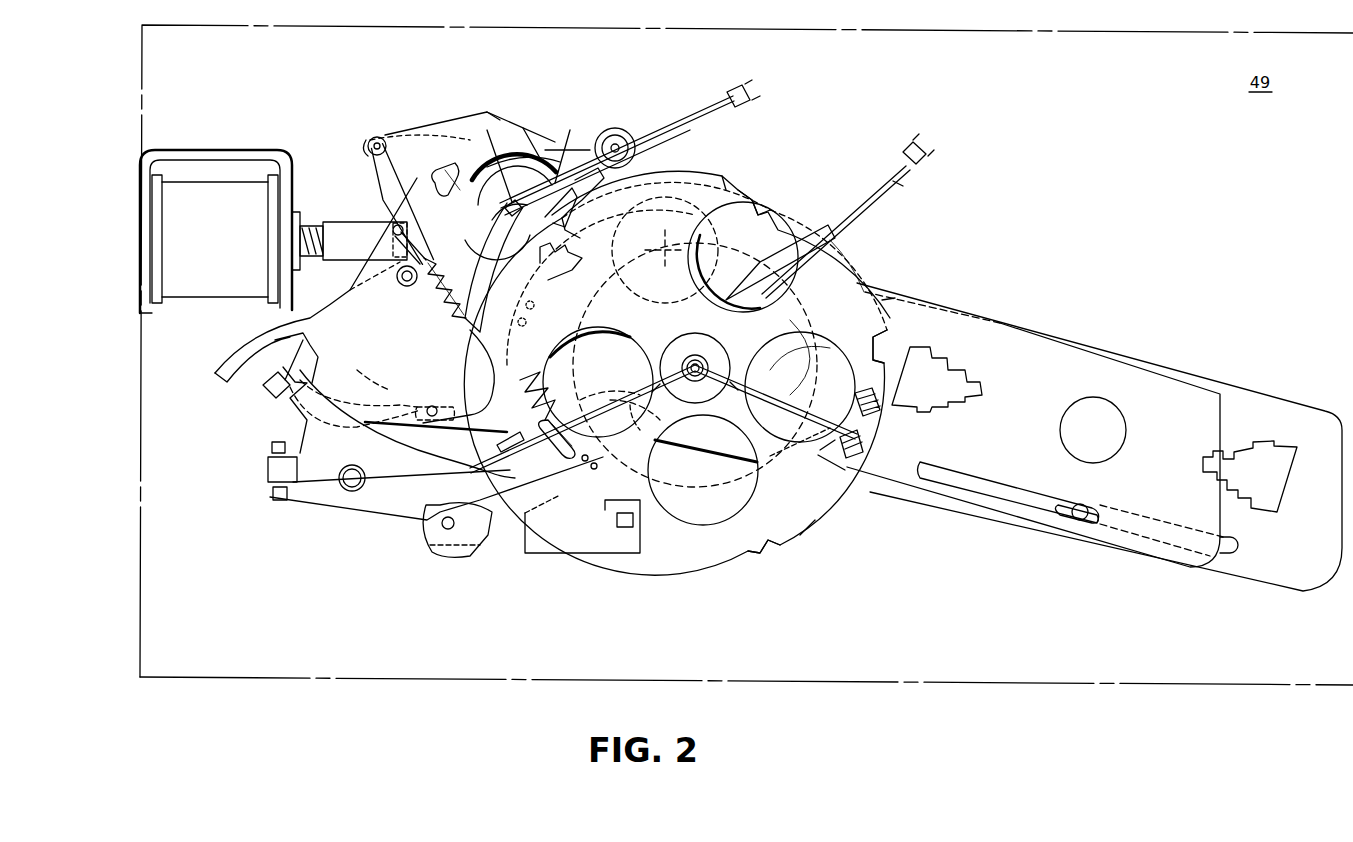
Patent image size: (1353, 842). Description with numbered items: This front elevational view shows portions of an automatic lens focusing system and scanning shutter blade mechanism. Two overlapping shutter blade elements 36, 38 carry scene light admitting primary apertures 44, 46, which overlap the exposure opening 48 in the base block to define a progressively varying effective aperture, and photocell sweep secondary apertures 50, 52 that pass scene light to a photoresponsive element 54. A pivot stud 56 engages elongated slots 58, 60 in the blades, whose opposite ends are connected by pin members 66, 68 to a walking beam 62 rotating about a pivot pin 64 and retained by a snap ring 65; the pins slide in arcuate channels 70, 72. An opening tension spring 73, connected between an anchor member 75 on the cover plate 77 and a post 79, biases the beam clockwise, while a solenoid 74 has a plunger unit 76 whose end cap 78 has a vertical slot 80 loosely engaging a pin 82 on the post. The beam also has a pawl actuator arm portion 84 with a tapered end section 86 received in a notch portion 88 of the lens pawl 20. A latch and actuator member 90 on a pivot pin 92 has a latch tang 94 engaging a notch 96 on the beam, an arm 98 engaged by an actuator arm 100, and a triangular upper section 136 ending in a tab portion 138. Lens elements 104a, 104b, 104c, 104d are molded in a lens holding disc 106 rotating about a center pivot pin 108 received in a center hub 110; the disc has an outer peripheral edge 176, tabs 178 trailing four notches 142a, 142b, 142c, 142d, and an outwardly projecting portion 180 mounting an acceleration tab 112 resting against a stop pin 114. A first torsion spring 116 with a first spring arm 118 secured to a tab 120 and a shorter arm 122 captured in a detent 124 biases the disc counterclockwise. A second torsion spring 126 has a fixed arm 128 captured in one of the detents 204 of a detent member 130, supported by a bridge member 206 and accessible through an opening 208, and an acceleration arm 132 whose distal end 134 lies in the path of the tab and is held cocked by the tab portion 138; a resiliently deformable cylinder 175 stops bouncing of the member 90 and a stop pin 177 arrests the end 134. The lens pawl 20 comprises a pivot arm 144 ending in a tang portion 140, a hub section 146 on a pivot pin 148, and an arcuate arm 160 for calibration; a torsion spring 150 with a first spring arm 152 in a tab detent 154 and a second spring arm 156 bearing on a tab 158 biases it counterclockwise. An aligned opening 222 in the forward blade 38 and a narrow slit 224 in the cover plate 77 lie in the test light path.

The lens pawl 20 is at (586, 148).
The shutter blade element 36 is at (880, 272).
The shutter blade element 38 is at (880, 482).
The primary aperture 44 is at (818, 236).
The primary aperture 46 is at (530, 160).
The exposure opening 48 is at (652, 200).
The secondary aperture 50 is at (1266, 458).
The secondary aperture 52 is at (948, 383).
The photoresponsive element 54 is at (1128, 438).
The pivot stud 56 is at (1082, 504).
The elongated slot 58 is at (1238, 546).
The elongated slot 60 is at (985, 472).
The walking beam 62 is at (345, 292).
The pivot pin 64 is at (405, 282).
The snap ring 65 is at (397, 278).
The pin member 66 is at (431, 404).
The pin member 68 is at (368, 142).
The arcuate channel 70 is at (380, 405).
The arcuate channel 72 is at (425, 140).
The opening tension spring 73 is at (462, 318).
The solenoid 74 is at (284, 138).
The anchor member 75 is at (540, 508).
The plunger unit 76 is at (312, 224).
The cover plate 77 is at (456, 558).
The end cap 78 is at (340, 232).
The post 79 is at (422, 247).
The vertical slot 80 is at (395, 246).
The pin 82 is at (397, 225).
The pawl actuator arm portion 84 is at (452, 286).
The tapered end section 86 is at (498, 222).
The notch portion 88 is at (561, 207).
The latch and actuator member 90 is at (405, 510).
The pivot pin 92 is at (366, 480).
The latch tang 94 is at (270, 380).
The notch 96 is at (272, 400).
The arm 98 is at (268, 470).
The actuator arm 100 is at (259, 439).
The lens element 104a is at (592, 365).
The lens element 104b is at (740, 500).
The lens element 104c is at (806, 345).
The lens element 104d is at (776, 277).
The lens holding disc 106 is at (810, 515).
The center pivot pin 108 is at (640, 390).
The center hub 110 is at (685, 360).
The acceleration tab 112 is at (505, 432).
The stop pin 114 is at (495, 446).
The first torsion spring 116 is at (863, 212).
The first spring arm 118 is at (898, 178).
The tab 120 is at (926, 155).
The shorter arm 122 is at (672, 425).
The detent 124 is at (662, 365).
The second torsion spring 126 is at (690, 318).
The fixed arm 128 is at (788, 388).
The detent member 130 is at (866, 447).
The acceleration arm 132 is at (624, 406).
The distal end 134 is at (575, 460).
The triangular upper section 136 is at (652, 455).
The tab portion 138 is at (560, 400).
The tang portion 140 is at (534, 278).
The notch 142a is at (760, 553).
The notch 142b is at (890, 350).
The notch 142c is at (760, 200).
The notch 142d is at (590, 215).
The pivot arm 144 is at (572, 145).
The hub section 146 is at (615, 128).
The pivot pin 148 is at (645, 140).
The torsion spring 150 is at (628, 135).
The first spring arm 152 is at (700, 118).
The tab detent 154 is at (738, 88).
The second spring arm 156 is at (562, 168).
The tab 158 is at (522, 200).
The arcuate arm 160 is at (432, 185).
The resiliently deformable cylinder 175 is at (534, 305).
The outer peripheral edge 176 is at (858, 262).
The stop pin 177 is at (526, 323).
The tab 178 is at (726, 180).
The outwardly projecting portion 180 is at (490, 400).
The detent 204 is at (882, 420).
The bridge member 206 is at (810, 453).
The opening 208 is at (828, 470).
The aligned opening 222 is at (478, 160).
The narrow slit 224 is at (468, 135).